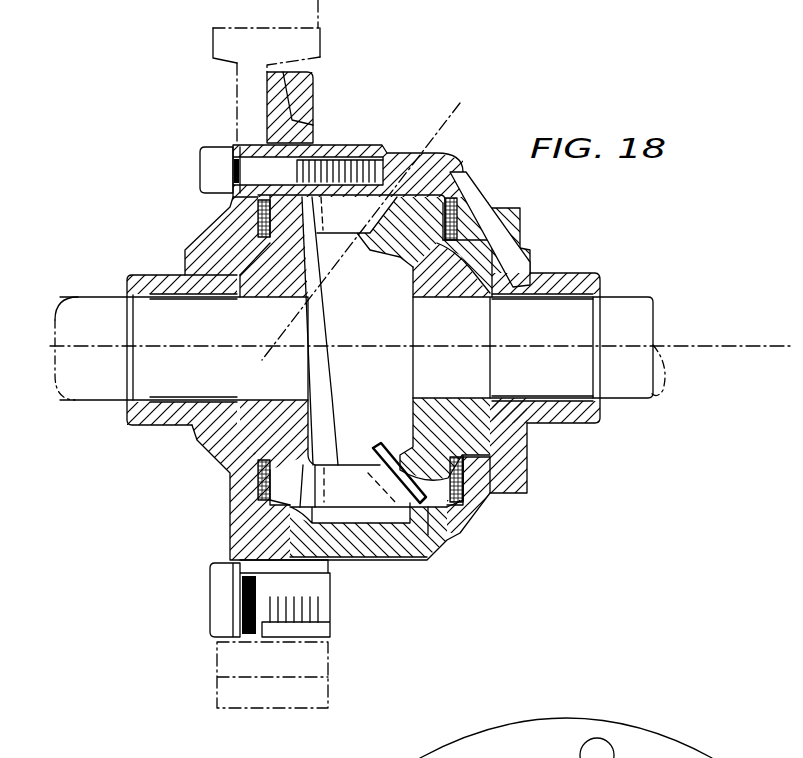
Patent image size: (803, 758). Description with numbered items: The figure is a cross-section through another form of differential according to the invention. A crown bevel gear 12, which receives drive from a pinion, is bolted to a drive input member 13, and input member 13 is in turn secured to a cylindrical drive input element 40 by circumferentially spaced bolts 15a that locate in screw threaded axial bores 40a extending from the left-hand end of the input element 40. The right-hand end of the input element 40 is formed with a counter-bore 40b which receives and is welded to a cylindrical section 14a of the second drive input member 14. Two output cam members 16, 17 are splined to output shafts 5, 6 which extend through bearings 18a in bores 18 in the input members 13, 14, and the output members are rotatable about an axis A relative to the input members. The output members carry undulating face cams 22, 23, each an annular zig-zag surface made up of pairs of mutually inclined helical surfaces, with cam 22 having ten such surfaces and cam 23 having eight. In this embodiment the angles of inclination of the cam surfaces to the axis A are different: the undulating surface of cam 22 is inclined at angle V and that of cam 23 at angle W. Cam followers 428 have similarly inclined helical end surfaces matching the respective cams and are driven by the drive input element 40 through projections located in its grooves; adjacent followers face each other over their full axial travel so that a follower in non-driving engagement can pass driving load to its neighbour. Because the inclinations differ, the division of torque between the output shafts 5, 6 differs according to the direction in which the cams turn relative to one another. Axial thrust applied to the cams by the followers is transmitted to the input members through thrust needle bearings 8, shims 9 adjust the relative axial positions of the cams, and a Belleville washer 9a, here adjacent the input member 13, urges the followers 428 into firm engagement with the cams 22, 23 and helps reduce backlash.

The output shaft 5 is at (82, 297).
The output shaft 6 is at (660, 308).
The axis A is at (667, 333).
The angle of inclination W is at (262, 357).
The angle of inclination V is at (327, 340).
The thrust needle bearing 8 is at (437, 533).
The shim 9 is at (465, 475).
The Belleville washer 9a is at (280, 453).
The crown bevel gear 12 is at (211, 20).
The drive input member 13 is at (235, 556).
The drive input member 14 is at (494, 505).
The cylindrical section 14a is at (443, 183).
The bolt 15a is at (212, 166).
The output cam member 16 is at (247, 407).
The output cam member 17 is at (467, 420).
The bore 18 is at (180, 248).
The bearing 18a is at (173, 397).
The undulating face cam 22 is at (263, 497).
The undulating face cam 23 is at (480, 481).
The cylindrical drive input element 40 is at (411, 579).
The screw threaded axial bore 40a is at (340, 153).
The counter-bore 40b is at (452, 153).
The cam follower 428 is at (412, 186).